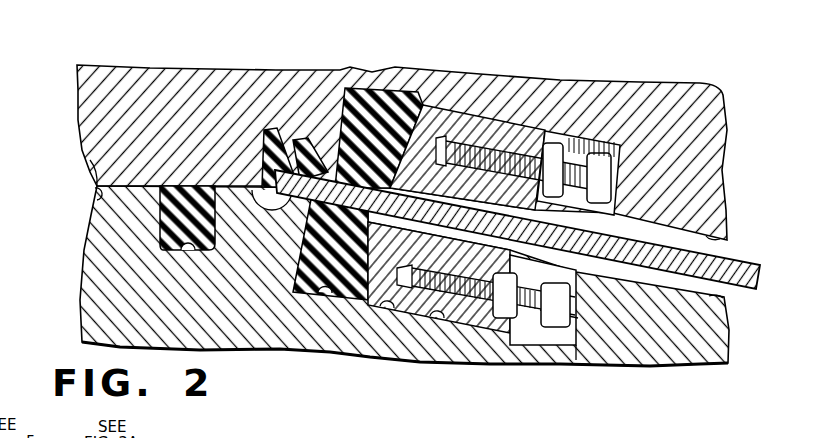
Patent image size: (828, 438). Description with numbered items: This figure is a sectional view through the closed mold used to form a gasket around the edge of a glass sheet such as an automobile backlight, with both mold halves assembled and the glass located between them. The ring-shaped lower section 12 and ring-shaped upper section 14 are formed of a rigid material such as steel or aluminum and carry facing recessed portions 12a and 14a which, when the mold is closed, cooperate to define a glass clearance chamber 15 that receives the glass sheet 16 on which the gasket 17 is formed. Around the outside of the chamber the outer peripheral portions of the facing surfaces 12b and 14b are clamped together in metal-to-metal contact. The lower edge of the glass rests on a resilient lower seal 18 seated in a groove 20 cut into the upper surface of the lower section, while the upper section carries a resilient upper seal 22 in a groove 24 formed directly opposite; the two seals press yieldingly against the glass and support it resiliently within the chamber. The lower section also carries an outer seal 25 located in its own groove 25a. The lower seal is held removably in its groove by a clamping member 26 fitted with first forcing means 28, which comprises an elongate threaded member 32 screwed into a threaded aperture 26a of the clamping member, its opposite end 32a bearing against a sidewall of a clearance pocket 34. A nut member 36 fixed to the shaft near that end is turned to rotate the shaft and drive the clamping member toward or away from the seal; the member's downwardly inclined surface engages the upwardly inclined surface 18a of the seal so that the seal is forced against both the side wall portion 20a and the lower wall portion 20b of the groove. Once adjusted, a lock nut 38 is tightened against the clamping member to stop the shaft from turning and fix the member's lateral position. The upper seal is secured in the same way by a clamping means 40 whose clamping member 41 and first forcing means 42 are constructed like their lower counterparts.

The lower section 12 is at (95, 284).
The recessed portion 12a is at (727, 300).
The facing surface 12b is at (110, 186).
The upper section 14 is at (85, 100).
The recessed portion 14a is at (722, 210).
The facing surface 14b is at (96, 200).
The glass clearance chamber 15 is at (728, 250).
The glass sheet 16 is at (762, 272).
The gasket 17 is at (270, 138).
The lower seal 18 is at (300, 272).
The upwardly inclined surface 18a is at (363, 302).
The groove 20 is at (296, 298).
The side wall portion 20a is at (312, 238).
The lower wall portion 20b is at (437, 316).
The upper seal 22 is at (392, 103).
The groove 24 is at (356, 88).
The outer seal 25 is at (160, 224).
The groove 25a is at (180, 255).
The clamping member 26 is at (420, 328).
The threaded aperture 26a is at (343, 305).
The first forcing means 28 is at (527, 334).
The threaded member 32 is at (497, 328).
The end of threaded member 32a is at (583, 303).
The clearance pocket 34 is at (574, 340).
The nut member 36 is at (546, 334).
The lock nut 38 is at (525, 328).
The clamping means 40 is at (520, 112).
The clamping member 41 is at (463, 118).
The first forcing means 42 is at (602, 135).